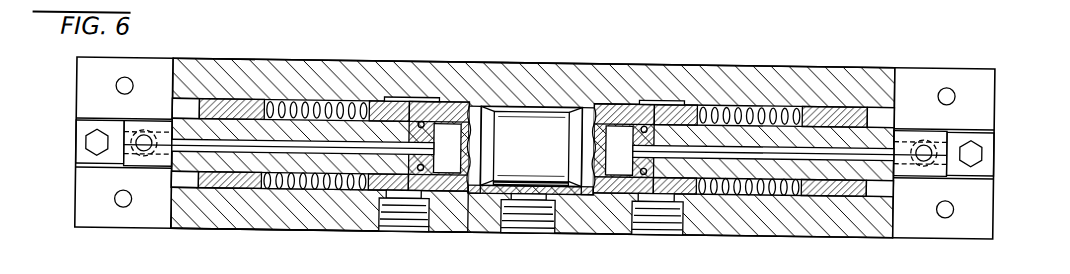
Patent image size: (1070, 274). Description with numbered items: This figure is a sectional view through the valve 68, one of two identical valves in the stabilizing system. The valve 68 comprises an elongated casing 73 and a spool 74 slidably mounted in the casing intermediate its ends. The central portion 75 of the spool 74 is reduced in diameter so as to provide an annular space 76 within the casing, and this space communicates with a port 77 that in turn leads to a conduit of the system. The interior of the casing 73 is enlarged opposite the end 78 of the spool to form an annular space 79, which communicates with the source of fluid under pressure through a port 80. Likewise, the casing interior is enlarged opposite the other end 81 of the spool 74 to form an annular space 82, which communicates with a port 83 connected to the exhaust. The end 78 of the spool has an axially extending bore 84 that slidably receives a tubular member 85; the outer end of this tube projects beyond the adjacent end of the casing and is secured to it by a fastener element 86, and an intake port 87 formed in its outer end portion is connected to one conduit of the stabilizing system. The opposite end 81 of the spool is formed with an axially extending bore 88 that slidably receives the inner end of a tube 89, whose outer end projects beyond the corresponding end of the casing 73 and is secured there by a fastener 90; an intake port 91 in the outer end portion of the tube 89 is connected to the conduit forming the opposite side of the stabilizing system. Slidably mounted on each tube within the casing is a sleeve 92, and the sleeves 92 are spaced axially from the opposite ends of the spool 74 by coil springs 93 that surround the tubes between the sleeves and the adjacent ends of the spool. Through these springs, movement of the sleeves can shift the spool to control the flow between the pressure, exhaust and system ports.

The valve 68 is at (519, 52).
The elongated casing 73 is at (612, 70).
The spool 74 is at (512, 100).
The central portion 75 is at (551, 115).
The annular space 76 is at (530, 103).
The port 77 is at (537, 209).
The end of the spool 78 is at (684, 98).
The annular space 79 is at (652, 93).
The port 80 is at (660, 212).
The other end of the spool 81 is at (428, 100).
The annular space 82 is at (394, 94).
The port 83 is at (405, 211).
The axially extending bore 84 is at (652, 150).
The tubular member 85 is at (825, 125).
The fastener element 86 is at (985, 147).
The intake port 87 is at (925, 152).
The axially extending bore 88 is at (412, 156).
The tube 89 is at (187, 160).
The fastener 90 is at (88, 147).
The intake port 91 is at (150, 134).
The sleeve 92 is at (232, 102).
The coil spring 93 is at (312, 105).